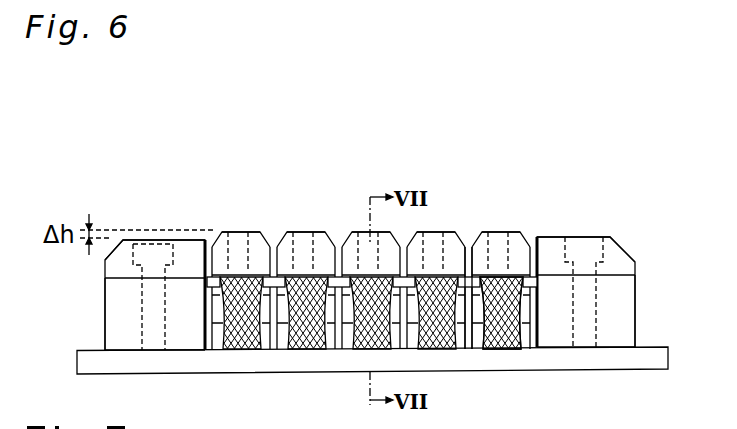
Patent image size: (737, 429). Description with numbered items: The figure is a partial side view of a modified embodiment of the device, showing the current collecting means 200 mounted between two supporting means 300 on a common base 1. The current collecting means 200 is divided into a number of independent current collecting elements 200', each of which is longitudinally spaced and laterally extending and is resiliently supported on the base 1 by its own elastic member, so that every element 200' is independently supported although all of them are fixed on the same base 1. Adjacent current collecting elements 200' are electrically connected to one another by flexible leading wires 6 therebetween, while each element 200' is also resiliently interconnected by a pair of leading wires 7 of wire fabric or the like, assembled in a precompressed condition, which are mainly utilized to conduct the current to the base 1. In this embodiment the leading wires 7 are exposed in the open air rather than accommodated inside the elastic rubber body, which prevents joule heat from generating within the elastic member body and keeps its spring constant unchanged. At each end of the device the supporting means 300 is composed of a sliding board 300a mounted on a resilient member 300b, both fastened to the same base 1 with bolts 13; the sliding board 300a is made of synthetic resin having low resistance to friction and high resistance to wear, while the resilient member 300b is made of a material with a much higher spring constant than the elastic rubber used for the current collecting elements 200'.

The base 1 is at (277, 358).
The flexible leading wire 6 is at (470, 238).
The leading wire 7 is at (505, 348).
The bolt 13 is at (592, 237).
The current collecting means 200 is at (372, 183).
The current collecting element 200' is at (375, 246).
The supporting means 300 is at (200, 137).
The sliding board 300a is at (118, 260).
The resilient member 300b is at (122, 300).